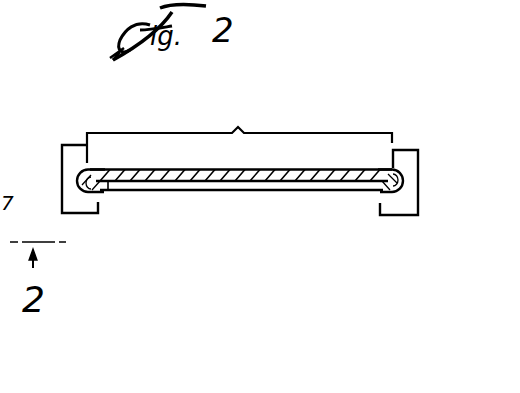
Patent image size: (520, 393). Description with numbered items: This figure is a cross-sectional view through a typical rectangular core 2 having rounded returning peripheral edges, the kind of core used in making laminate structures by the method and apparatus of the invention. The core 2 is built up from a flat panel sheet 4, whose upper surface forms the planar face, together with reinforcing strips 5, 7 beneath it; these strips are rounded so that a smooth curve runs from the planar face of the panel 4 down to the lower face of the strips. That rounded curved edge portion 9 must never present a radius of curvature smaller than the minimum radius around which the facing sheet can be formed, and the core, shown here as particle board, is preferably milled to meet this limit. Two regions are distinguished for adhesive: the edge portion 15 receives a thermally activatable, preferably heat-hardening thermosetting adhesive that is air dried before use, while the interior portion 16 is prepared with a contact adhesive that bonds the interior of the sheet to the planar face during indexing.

The core 2 is at (252, 189).
The flat panel sheet 4 is at (304, 170).
The reinforcing strip 5 is at (106, 183).
The reinforcing strip 7 is at (385, 188).
The curved edge portion 9 is at (80, 171).
The edge portion 15 is at (62, 165).
The interior portion 16 is at (238, 125).